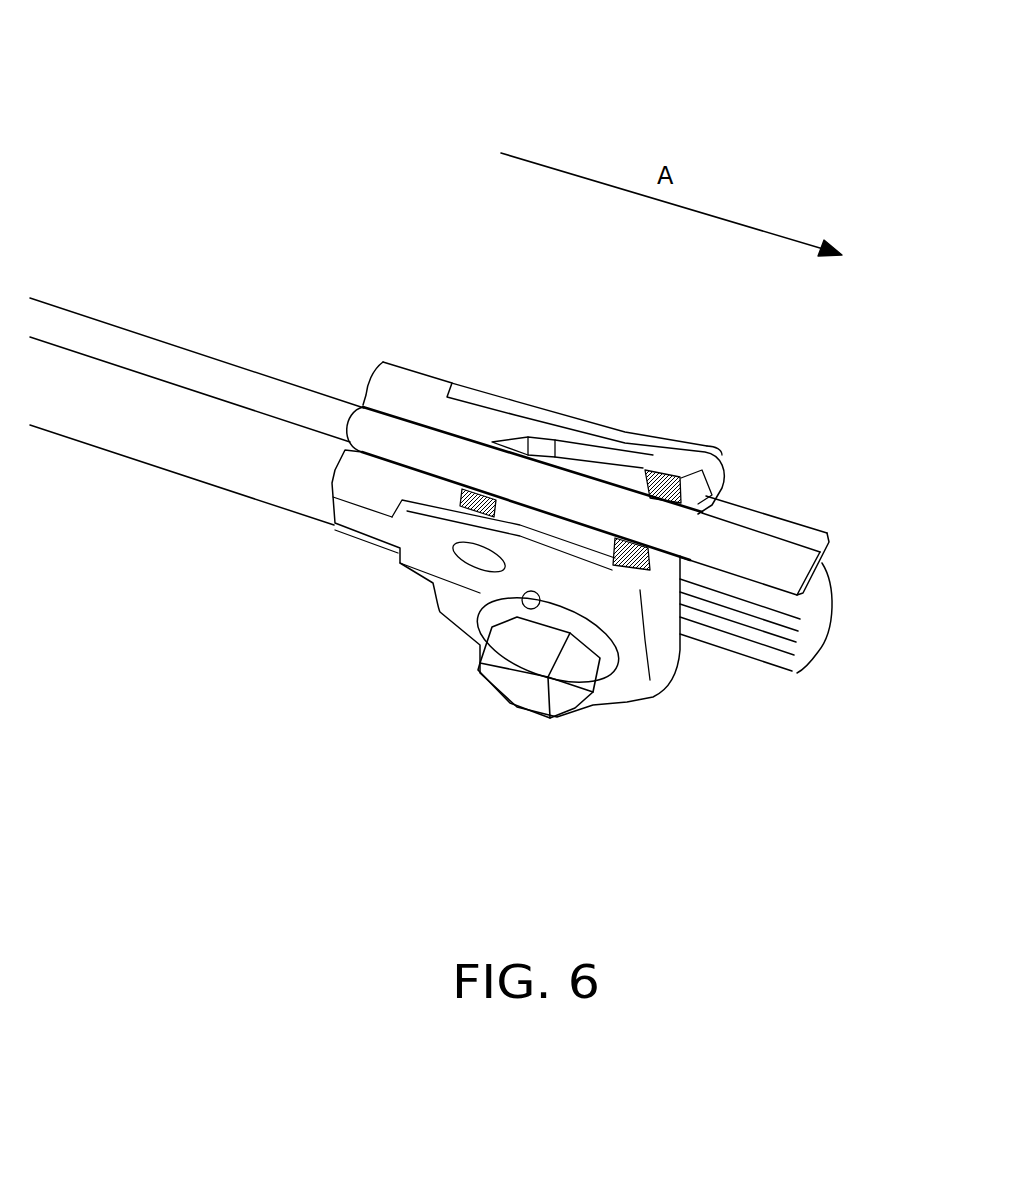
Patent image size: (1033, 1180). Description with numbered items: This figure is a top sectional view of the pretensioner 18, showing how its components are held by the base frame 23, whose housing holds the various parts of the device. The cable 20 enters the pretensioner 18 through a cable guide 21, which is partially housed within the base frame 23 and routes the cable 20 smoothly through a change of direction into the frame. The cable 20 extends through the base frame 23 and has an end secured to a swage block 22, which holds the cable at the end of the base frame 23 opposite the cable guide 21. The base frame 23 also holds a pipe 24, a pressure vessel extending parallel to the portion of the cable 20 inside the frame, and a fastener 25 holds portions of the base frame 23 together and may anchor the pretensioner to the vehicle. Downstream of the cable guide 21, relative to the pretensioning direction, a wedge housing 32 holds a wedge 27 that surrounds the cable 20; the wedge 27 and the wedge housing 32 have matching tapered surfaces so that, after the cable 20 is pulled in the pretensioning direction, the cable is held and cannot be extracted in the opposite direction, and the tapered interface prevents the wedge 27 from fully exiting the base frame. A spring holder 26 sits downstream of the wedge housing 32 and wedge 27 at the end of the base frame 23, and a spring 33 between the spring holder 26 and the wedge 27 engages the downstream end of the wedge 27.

The pretensioner 18 is at (166, 160).
The cable 20 is at (732, 548).
The cable guide 21 is at (397, 370).
The swage block 22 is at (817, 610).
The base frame 23 is at (640, 688).
The pipe 24 is at (187, 460).
The fastener 25 is at (528, 702).
The spring holder 26 is at (688, 474).
The wedge 27 is at (555, 458).
The wedge housing 32 is at (497, 520).
The spring 33 is at (650, 468).